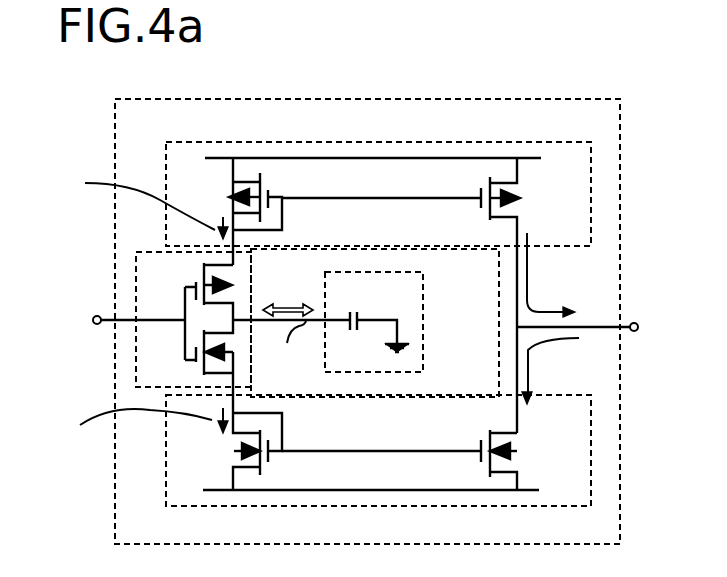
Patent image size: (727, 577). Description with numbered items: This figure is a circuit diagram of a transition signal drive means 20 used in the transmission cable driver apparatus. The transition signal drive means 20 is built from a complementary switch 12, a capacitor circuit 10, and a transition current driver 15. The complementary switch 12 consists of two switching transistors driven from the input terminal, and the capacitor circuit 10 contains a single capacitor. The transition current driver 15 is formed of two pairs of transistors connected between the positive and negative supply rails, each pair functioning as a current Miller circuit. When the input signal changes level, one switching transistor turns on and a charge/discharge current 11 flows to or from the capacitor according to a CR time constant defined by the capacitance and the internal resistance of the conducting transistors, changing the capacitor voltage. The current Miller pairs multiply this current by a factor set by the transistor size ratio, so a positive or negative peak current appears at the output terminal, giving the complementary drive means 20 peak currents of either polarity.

The transition signal drive means 20 is at (419, 100).
The transition current driver 15 is at (328, 141).
The complementary switch 12 is at (138, 292).
The charge/discharge current 11 is at (366, 323).
The capacitor circuit 10 is at (427, 302).